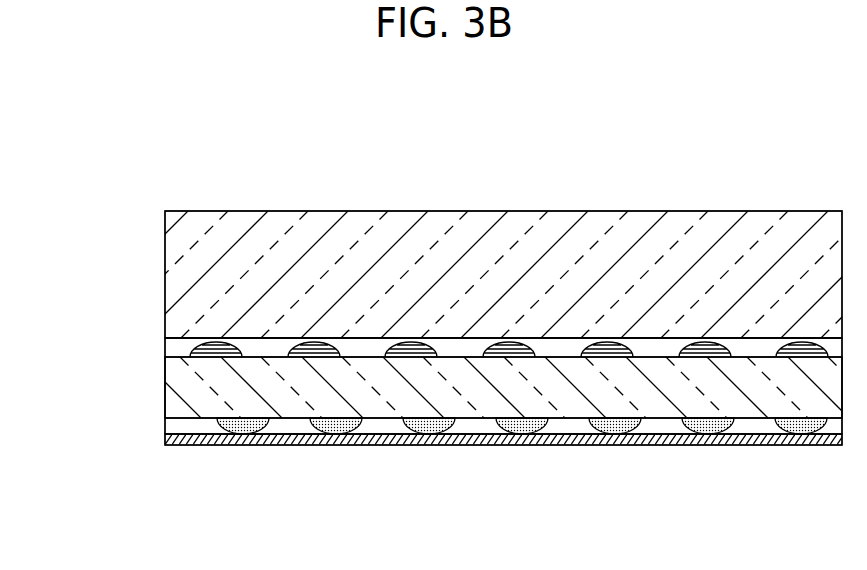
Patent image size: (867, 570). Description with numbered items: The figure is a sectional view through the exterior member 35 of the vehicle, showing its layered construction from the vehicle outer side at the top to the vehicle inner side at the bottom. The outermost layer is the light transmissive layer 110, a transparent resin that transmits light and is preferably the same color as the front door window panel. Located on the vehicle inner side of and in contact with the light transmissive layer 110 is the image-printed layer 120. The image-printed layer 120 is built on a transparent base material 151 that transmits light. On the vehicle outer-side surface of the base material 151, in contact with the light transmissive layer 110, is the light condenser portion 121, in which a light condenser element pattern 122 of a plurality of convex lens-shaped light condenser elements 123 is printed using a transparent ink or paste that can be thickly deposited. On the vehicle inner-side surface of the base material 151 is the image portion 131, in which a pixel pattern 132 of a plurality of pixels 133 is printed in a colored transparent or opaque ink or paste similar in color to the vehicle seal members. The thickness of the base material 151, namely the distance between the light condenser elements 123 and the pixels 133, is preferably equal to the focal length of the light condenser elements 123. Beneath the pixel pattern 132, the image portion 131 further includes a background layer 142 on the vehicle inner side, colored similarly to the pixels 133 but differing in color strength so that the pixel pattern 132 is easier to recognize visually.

The exterior member 35 is at (189, 211).
The light transmissive layer 110 is at (192, 242).
The image-printed layer 120 is at (88, 332).
The light condenser portion 121 is at (163, 338).
The light condenser element pattern 122 is at (512, 234).
The light condenser element 123 is at (835, 150).
The base material 151 is at (183, 382).
The image portion 131 is at (163, 418).
The pixel pattern 132 is at (523, 473).
The pixel 133 is at (835, 488).
The background layer 142 is at (200, 443).